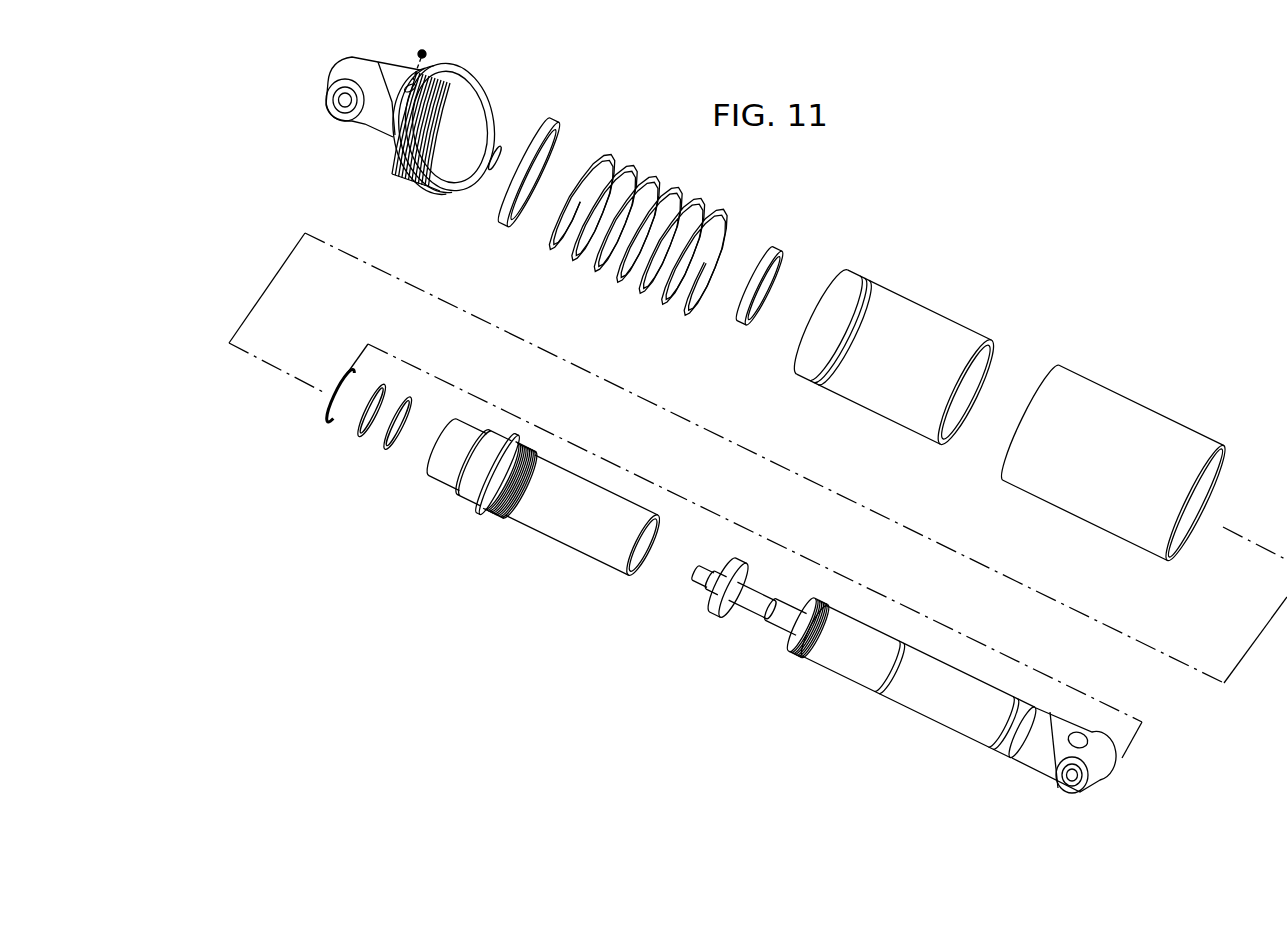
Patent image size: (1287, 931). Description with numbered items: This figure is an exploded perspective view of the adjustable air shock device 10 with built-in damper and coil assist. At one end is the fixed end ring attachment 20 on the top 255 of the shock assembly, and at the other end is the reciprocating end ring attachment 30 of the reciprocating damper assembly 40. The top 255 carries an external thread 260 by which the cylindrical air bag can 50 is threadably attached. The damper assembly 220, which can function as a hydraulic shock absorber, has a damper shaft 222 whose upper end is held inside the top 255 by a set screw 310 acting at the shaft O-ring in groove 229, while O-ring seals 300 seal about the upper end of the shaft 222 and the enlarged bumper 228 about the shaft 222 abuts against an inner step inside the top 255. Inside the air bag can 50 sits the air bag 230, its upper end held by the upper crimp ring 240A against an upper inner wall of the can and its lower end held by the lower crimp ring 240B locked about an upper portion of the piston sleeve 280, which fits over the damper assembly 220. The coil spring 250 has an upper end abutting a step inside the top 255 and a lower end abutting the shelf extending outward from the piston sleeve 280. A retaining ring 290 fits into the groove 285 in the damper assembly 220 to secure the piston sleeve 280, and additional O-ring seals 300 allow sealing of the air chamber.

The shock device with assist coil 10 is at (1034, 187).
The fixed end ring attachment 20 is at (339, 97).
The reciprocating end ring attachment 30 is at (1053, 767).
The reciprocating damper assembly 40 is at (800, 565).
The air bag can 50 is at (1113, 463).
The damper assembly 220 is at (903, 724).
The damper shaft 222 is at (749, 640).
The bumper 228 is at (699, 611).
The shaft O-ring in groove 229 is at (659, 601).
The air bag 230 is at (910, 357).
The upper crimp ring 240A is at (568, 160).
The lower crimp ring 240B is at (810, 265).
The coil spring 250 is at (643, 232).
The top of shock assembly 255 is at (393, 128).
The external thread on top of shock 260 is at (388, 146).
The piston sleeve 280 is at (542, 496).
The groove in purchased damper assembly 285 is at (788, 667).
The retaining ring 290 is at (292, 416).
The O-ring seals 300 is at (337, 496).
The set screw 310 is at (460, 65).